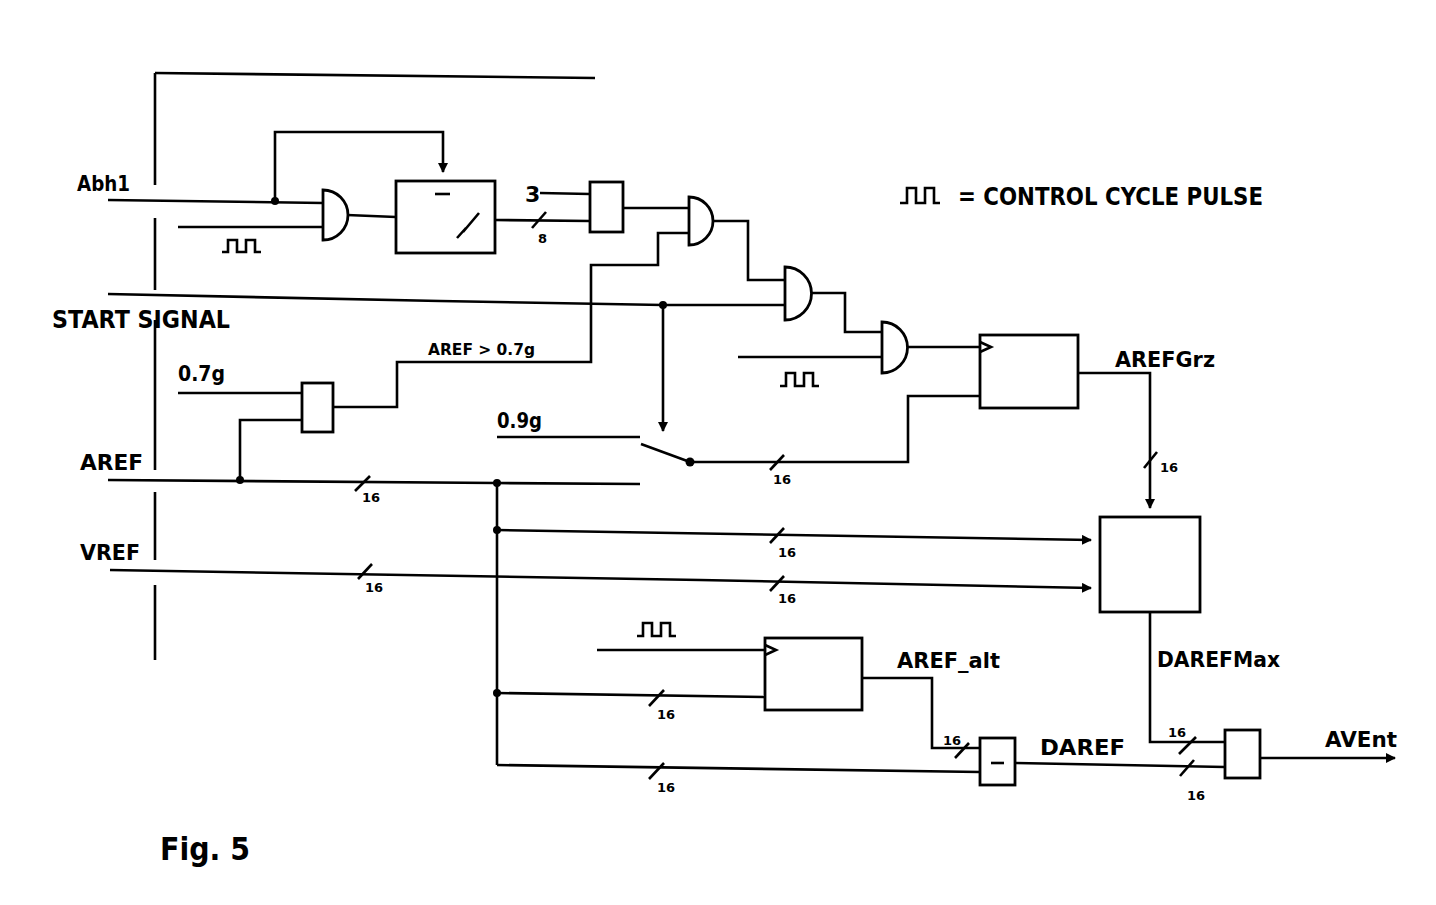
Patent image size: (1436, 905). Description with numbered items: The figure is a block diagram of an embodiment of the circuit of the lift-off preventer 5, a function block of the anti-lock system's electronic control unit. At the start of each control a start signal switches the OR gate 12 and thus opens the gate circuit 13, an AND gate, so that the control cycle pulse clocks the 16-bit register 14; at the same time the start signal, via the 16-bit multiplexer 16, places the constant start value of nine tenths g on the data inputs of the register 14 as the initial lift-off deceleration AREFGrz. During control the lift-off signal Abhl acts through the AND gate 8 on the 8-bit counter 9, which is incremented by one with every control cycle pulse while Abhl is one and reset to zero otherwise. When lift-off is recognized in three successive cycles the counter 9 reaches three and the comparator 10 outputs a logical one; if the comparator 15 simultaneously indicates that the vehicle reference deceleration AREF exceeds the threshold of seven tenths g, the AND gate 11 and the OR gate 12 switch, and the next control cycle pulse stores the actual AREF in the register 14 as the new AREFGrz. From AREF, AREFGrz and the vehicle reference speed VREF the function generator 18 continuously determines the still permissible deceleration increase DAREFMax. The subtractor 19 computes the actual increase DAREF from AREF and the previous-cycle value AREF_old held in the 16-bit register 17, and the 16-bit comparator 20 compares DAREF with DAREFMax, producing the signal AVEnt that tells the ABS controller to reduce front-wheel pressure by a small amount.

The lift-off preventer 5 is at (168, 70).
The AND gate 8 is at (338, 192).
The 8-bit counter 9 is at (418, 183).
The comparator 10 is at (620, 185).
The AND gate 11 is at (712, 196).
The OR gate 12 is at (808, 269).
The gate circuit (AND gate) 13 is at (907, 325).
The 16-bit register 14 is at (1006, 326).
The comparator 15 is at (331, 384).
The 16-bit multiplexer 16 is at (668, 464).
The 16-bit register 17 is at (818, 679).
The function generator 18 is at (1130, 517).
The subtractor 19 is at (1010, 738).
The 16-bit comparator 20 is at (1254, 730).